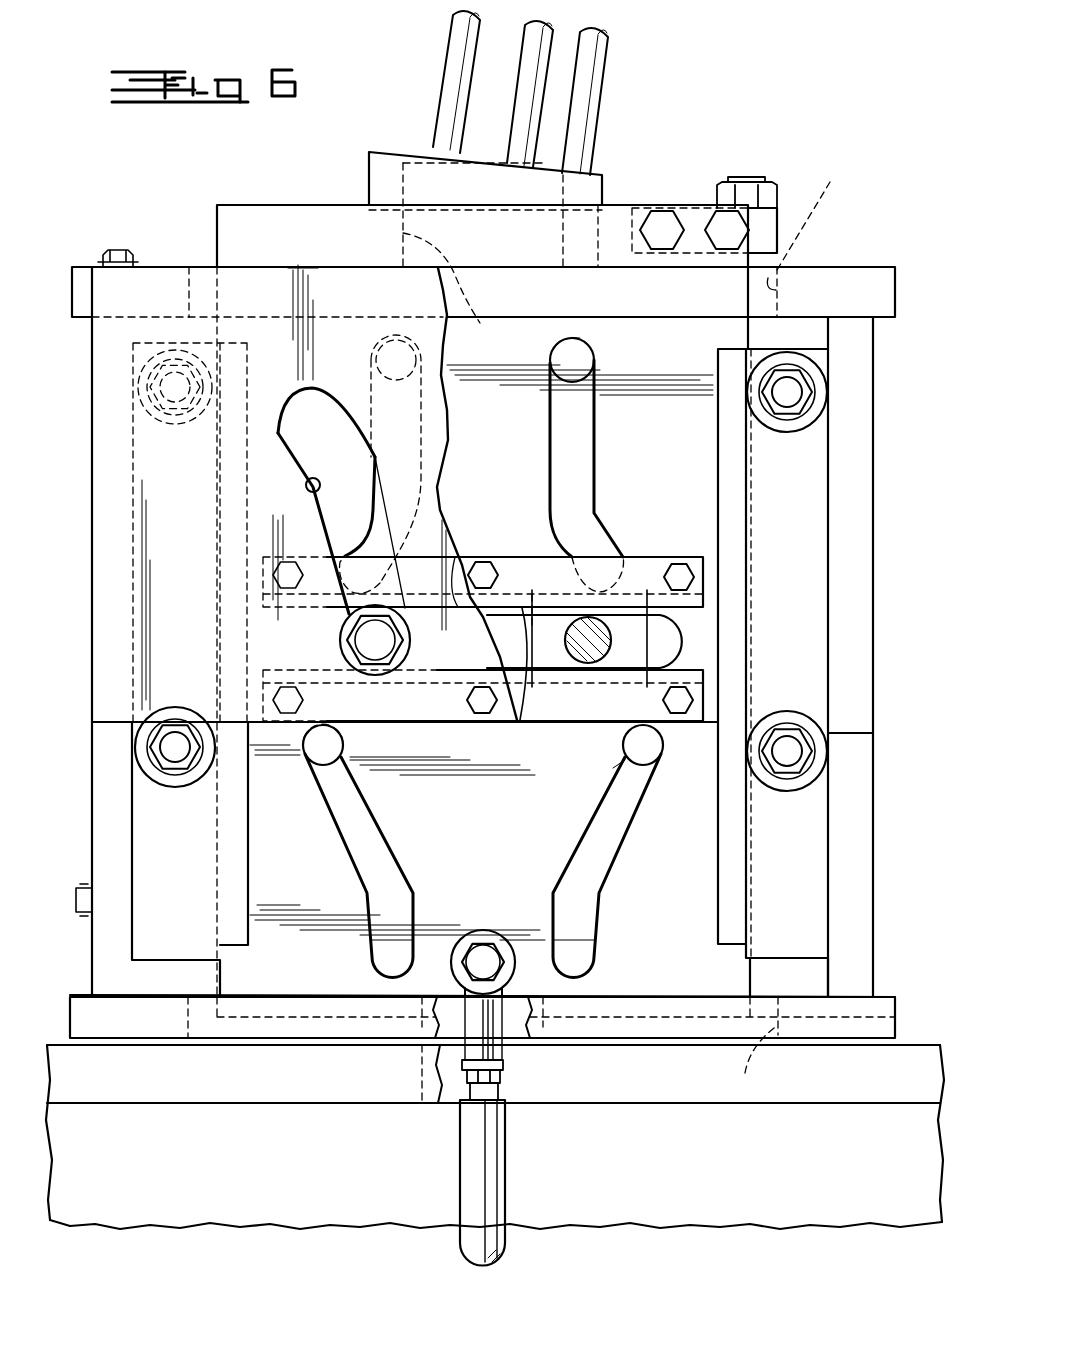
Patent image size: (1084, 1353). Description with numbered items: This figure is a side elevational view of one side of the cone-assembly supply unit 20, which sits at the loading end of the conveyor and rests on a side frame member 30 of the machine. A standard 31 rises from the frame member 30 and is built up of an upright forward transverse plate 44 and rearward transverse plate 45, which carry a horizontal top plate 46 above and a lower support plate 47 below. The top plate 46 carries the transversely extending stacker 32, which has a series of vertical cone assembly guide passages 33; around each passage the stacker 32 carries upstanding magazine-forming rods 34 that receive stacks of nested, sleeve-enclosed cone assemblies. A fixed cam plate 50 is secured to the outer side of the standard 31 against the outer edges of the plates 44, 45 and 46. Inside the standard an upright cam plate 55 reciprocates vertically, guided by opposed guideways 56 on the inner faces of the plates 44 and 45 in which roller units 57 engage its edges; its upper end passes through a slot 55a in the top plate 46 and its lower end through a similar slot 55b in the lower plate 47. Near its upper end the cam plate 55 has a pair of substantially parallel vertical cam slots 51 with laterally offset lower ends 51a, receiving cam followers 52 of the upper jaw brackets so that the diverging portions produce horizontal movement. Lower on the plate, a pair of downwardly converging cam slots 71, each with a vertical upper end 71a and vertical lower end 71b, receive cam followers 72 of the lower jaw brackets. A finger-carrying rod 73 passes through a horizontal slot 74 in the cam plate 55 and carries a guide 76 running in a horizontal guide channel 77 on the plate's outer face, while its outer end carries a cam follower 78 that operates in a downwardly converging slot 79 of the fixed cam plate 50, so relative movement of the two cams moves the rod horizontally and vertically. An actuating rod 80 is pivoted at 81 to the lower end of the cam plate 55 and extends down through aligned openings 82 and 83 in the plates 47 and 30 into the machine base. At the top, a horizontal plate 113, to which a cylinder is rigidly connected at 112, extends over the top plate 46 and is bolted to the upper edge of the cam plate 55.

The unit 20 is at (822, 236).
The side frame member 30 is at (918, 1062).
The standard 31 is at (880, 368).
The stacker 32 is at (608, 170).
The cone assembly guide passage 33 is at (452, 290).
The magazine-forming rod 34 is at (582, 100).
The forward transverse plate 44 is at (110, 770).
The rearward transverse plate 45 is at (866, 575).
The top plate 46 is at (78, 265).
The lower support plate 47 is at (890, 1010).
The cam plate 50 is at (288, 352).
The cam slot 51 is at (472, 469).
The laterally offset lower end of cam slot 51a is at (372, 530).
The cam follower 52 is at (388, 343).
The cam plate 55 is at (291, 222).
The slot in top plate 55a is at (821, 215).
The slot in lower plate 55b is at (742, 1057).
The guideway 56 is at (795, 505).
The roller unit 57 is at (175, 420).
The cam slot 71 is at (500, 866).
The vertical upper end of cam slot 71a is at (628, 757).
The vertical lower end of cam slot 71b is at (378, 948).
The cam follower 72 is at (628, 740).
The rod 73 is at (598, 658).
The horizontal slot 74 is at (688, 641).
The guide 76 is at (455, 555).
The horizontal guide channel 77 is at (513, 558).
The cam follower 78 is at (398, 660).
The slot 79 is at (307, 492).
The actuating rod 80 is at (505, 1185).
The pivot 81 is at (503, 973).
The opening 82 is at (515, 1012).
The opening 83 is at (455, 1085).
The cylinder connection 112 is at (742, 180).
The horizontal plate 113 is at (775, 210).